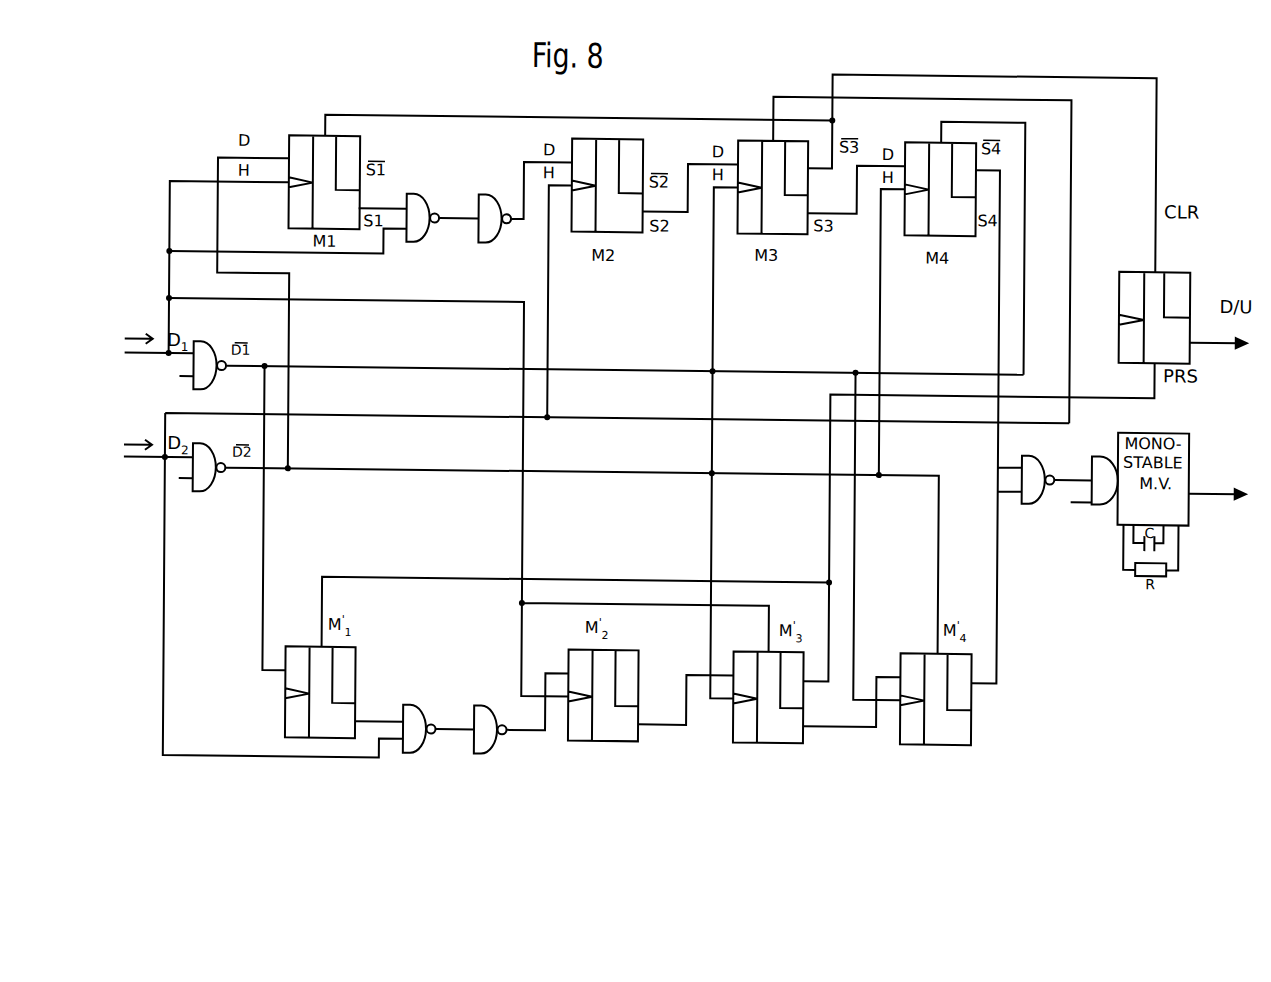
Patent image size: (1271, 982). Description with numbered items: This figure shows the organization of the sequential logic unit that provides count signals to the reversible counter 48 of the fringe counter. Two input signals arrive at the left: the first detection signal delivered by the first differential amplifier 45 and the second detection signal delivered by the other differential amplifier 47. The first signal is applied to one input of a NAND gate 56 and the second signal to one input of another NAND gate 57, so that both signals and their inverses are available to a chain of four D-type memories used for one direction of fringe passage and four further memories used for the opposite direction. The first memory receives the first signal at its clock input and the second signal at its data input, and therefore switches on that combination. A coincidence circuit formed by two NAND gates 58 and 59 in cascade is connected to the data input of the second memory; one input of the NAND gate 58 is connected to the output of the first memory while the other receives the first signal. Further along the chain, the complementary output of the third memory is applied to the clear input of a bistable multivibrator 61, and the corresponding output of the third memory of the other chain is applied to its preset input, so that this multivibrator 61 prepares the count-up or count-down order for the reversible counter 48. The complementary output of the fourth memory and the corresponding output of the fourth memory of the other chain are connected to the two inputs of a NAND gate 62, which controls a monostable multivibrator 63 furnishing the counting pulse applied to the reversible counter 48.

The first differential amplifier 45 is at (156, 329).
The differential amplifier 47 is at (156, 436).
The NAND gate 56 is at (206, 356).
The NAND gate 57 is at (203, 473).
The NAND gate 58 is at (418, 222).
The NAND gate 59 is at (492, 221).
The bistable multivibrator 61 is at (1192, 286).
The NAND gate 62 is at (1033, 482).
The monostable multivibrator 63 is at (1139, 481).
The reversible counter 48 is at (1230, 491).